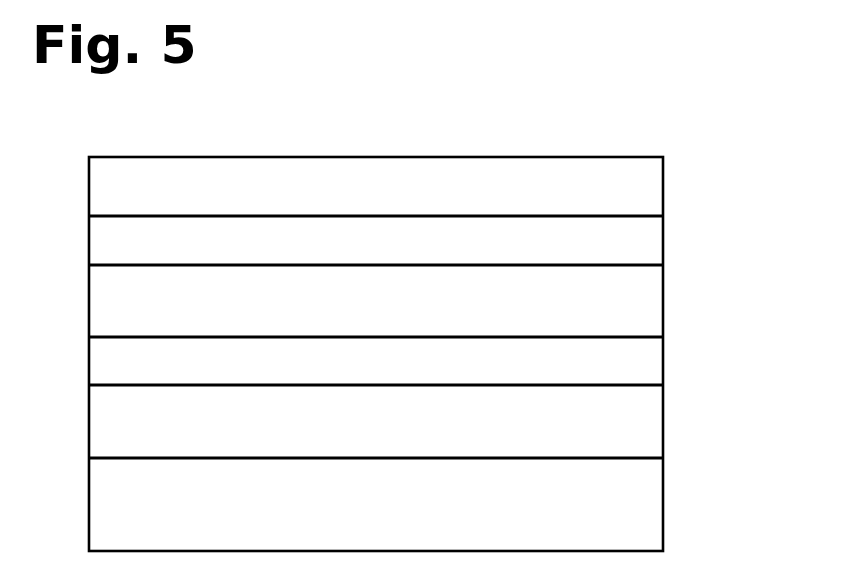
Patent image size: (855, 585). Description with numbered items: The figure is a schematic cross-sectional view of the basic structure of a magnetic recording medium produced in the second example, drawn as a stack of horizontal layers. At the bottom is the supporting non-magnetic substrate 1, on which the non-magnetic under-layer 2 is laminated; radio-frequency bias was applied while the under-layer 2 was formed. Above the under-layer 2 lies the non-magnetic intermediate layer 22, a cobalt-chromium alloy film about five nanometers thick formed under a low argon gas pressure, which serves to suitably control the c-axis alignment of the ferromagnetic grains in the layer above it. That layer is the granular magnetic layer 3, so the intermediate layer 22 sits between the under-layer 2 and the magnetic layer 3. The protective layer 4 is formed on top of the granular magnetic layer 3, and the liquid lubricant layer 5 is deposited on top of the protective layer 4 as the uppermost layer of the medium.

The non-magnetic substrate 1 is at (617, 507).
The non-magnetic under-layer 2 is at (622, 420).
The non-magnetic intermediate layer 22 is at (619, 357).
The granular magnetic layer 3 is at (618, 295).
The protective layer 4 is at (621, 239).
The liquid lubricant layer 5 is at (617, 183).